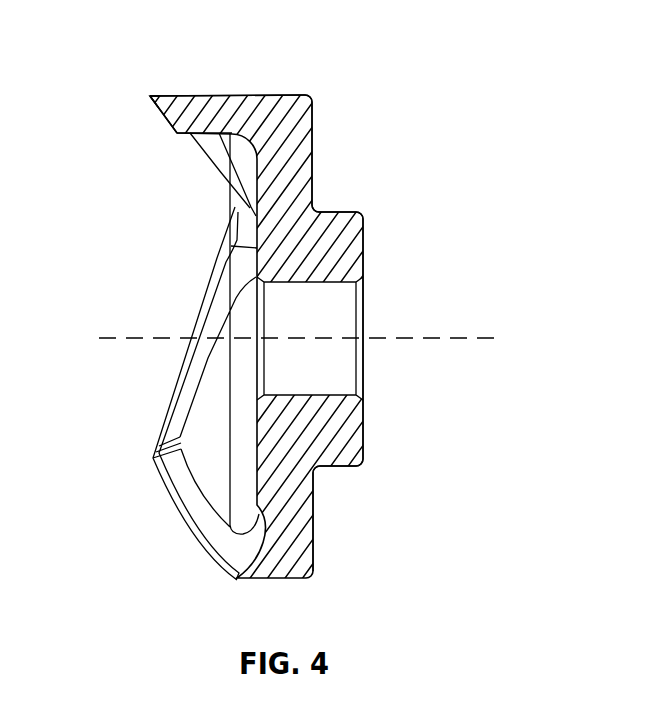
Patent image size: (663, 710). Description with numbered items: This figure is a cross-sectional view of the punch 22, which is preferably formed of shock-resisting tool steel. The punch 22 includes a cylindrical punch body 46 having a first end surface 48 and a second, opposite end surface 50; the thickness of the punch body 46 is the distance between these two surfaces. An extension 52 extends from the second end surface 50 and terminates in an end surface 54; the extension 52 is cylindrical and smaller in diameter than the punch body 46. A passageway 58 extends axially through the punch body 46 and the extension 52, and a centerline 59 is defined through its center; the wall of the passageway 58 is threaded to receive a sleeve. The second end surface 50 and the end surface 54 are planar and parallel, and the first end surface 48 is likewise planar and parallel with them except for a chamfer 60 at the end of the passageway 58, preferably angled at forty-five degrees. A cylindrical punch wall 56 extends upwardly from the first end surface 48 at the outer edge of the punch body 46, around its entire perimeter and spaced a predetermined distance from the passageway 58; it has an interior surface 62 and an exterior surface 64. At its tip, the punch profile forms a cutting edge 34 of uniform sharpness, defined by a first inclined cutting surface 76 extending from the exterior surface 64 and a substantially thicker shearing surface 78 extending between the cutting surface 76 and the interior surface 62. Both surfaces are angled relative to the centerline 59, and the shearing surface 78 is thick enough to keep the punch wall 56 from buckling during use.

The punch 22 is at (335, 122).
The cutting edge 34 is at (150, 97).
The exterior surface 64 is at (200, 95).
The cutting surface 76 is at (150, 98).
The shearing surface 78 is at (165, 117).
The interior surface 62 is at (199, 134).
The punch wall 56 is at (219, 133).
The punch body 46 is at (285, 103).
The second end surface 50 is at (312, 175).
The passageway 58 is at (338, 356).
The centerline 59 is at (450, 338).
The chamfer 60 is at (258, 398).
The end surface 54 is at (365, 424).
The extension 52 is at (333, 447).
The first end surface 48 is at (254, 428).